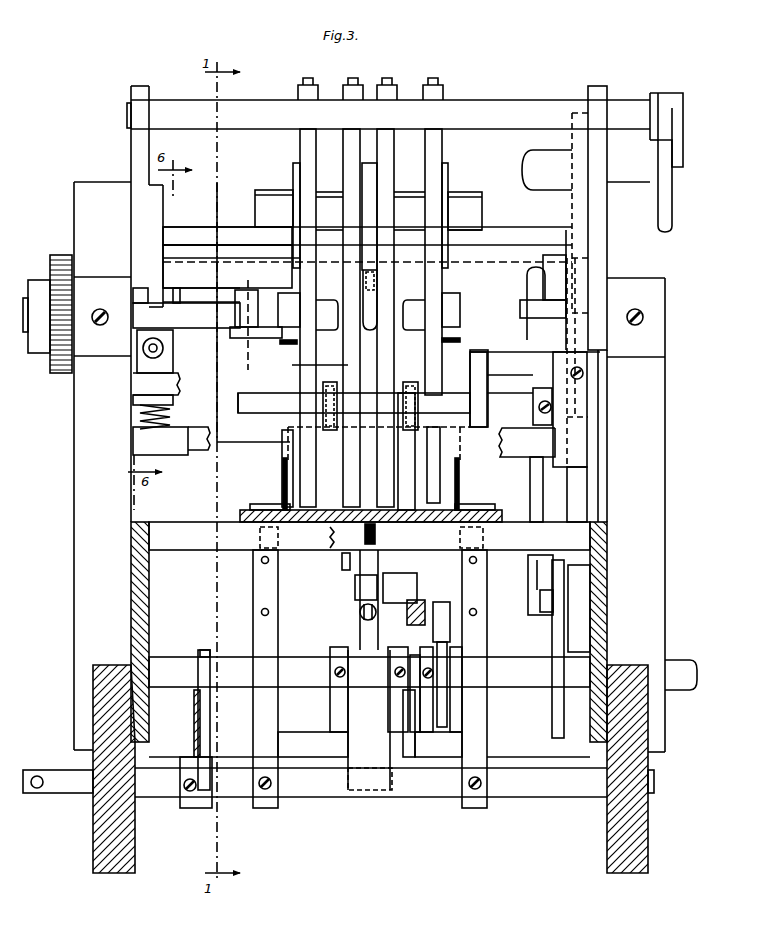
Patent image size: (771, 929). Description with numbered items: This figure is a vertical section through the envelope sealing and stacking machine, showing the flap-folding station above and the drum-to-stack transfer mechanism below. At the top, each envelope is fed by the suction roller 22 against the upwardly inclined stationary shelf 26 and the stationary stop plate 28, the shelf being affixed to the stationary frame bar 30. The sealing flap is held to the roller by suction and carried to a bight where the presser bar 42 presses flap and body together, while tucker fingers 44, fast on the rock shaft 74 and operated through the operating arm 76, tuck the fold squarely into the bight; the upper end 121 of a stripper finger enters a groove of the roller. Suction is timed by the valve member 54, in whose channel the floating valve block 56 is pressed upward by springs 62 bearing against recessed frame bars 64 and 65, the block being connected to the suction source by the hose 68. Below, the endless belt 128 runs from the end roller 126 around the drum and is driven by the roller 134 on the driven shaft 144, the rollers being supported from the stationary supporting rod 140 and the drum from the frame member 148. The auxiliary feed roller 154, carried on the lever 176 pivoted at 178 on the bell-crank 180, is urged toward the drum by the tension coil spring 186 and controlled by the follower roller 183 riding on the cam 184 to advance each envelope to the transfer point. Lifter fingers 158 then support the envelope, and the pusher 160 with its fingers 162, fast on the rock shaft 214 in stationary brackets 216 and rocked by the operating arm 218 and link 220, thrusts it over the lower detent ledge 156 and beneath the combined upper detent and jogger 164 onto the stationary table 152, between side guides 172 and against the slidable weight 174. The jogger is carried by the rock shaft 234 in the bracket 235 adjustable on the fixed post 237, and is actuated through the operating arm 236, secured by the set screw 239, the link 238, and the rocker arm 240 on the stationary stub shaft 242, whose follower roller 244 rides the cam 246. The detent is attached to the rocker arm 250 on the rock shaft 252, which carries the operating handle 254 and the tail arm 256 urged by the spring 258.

The suction roller 22 is at (252, 360).
The stationary shelf 26 is at (268, 192).
The stationary stop plate 28 is at (520, 382).
The stationary frame bar 30 is at (230, 232).
The presser bar 42 is at (290, 300).
The tucker fingers 44 is at (330, 208).
The valve member 54 is at (185, 300).
The floating valve block 56 is at (145, 365).
The springs 62 is at (140, 415).
The recessed frame bar 64 is at (204, 455).
The recessed frame bar 65 is at (174, 455).
The hose 68 is at (165, 348).
The rock shaft 74 is at (225, 277).
The operating arm 76 is at (536, 328).
The upper end of stripper finger 121 is at (368, 332).
The end roller 126 is at (392, 782).
The endless belt 128 is at (357, 745).
The roller 134 is at (350, 702).
The stationary supporting rod 140 is at (297, 735).
The driven shaft 144 is at (228, 656).
The frame member 148 is at (412, 743).
The stationary table 152 is at (240, 515).
The auxiliary feed roller 154 is at (376, 532).
The lower detent ledge 156 is at (268, 505).
The lifter fingers 158 is at (338, 462).
The pusher 160 is at (298, 153).
The pusher fingers 162 is at (292, 360).
The combined upper detent and jogger 164 is at (322, 402).
The side guides 172 is at (281, 468).
The slidable weight 174 is at (440, 450).
The lever 176 is at (368, 556).
The pivot 178 is at (357, 587).
The bell-crank 180 is at (410, 614).
The follower roller 183 is at (440, 604).
The cam 184 is at (442, 705).
The tension coil spring 186 is at (360, 614).
The rock shaft 214 is at (522, 107).
The stationary brackets 216 is at (137, 139).
The operating arm 218 is at (677, 154).
The link 220 is at (672, 201).
The rock shaft 234 is at (252, 398).
The bracket 235 is at (580, 445).
The operating arm 236 is at (538, 390).
The fixed post 237 is at (580, 488).
The link 238 is at (535, 516).
The set screw 239 is at (538, 407).
The rocker arm 240 is at (550, 558).
The stationary stub shaft 242 is at (580, 565).
The follower roller 244 is at (540, 598).
The cam 246 is at (556, 740).
The rocker arm 250 is at (480, 644).
The rock shaft 252 is at (306, 790).
The operating handle 254 is at (196, 740).
The tail arm 256 is at (37, 788).
The spring 258 is at (194, 716).